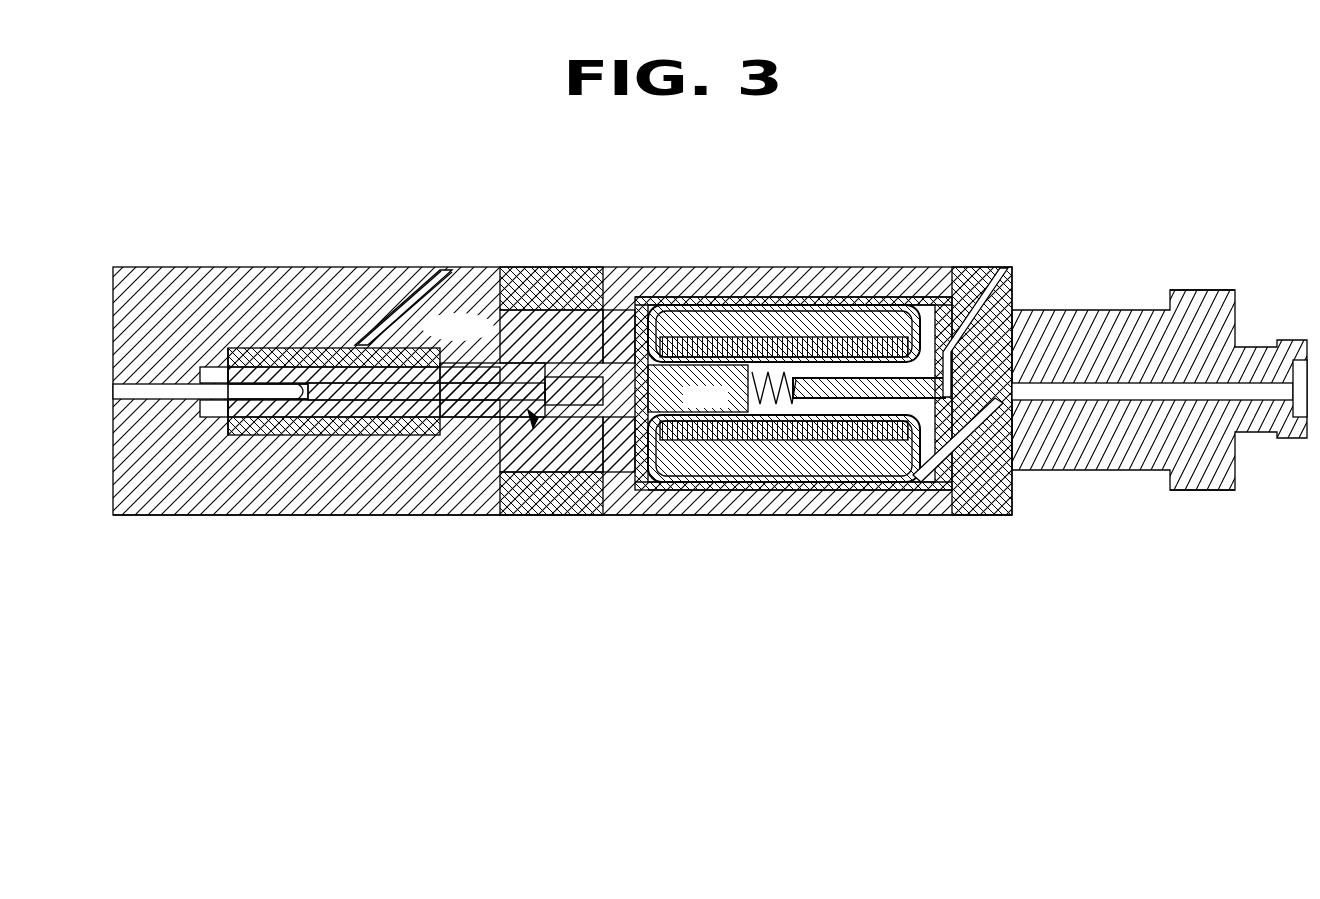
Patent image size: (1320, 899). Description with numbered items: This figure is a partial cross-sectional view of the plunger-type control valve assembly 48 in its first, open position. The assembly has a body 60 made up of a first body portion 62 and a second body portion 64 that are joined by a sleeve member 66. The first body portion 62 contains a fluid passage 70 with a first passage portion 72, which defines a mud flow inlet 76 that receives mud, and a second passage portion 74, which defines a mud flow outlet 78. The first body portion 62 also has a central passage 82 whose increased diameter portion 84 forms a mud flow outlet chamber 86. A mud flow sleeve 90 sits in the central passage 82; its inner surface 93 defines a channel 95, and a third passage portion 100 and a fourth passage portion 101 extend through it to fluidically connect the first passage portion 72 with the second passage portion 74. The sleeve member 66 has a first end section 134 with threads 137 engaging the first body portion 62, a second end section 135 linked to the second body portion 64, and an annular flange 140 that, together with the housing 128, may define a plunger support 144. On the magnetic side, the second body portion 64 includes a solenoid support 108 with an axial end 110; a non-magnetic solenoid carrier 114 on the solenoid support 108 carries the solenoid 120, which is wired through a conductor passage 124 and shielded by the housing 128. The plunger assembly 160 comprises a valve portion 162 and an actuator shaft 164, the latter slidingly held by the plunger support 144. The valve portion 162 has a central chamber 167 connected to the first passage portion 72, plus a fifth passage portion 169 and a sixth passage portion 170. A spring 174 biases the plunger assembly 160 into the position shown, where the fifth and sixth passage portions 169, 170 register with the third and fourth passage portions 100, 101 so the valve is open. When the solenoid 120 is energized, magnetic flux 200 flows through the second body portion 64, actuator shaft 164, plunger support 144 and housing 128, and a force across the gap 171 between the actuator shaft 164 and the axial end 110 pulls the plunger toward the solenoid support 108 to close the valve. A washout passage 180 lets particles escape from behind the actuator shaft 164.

The control valve assembly 48 is at (358, 100).
The body 60 is at (943, 520).
The solenoid 120 is at (908, 516).
The fluid passage 70 is at (160, 422).
The mud flow inlet 76 is at (118, 380).
The first passage portion 72 is at (126, 387).
The inner surface 93 is at (198, 378).
The third passage portion 100 is at (340, 310).
The mud flow sleeve 90 is at (230, 352).
The fifth passage portion 169 is at (253, 335).
The sixth passage portion 170 is at (428, 440).
The valve portion 162 is at (542, 425).
The plunger assembly 160 is at (497, 428).
The fourth passage portion 101 is at (434, 333).
The second passage portion 74 is at (400, 318).
The mud flow outlet 78 is at (452, 292).
The mud flow outlet chamber 86 is at (395, 330).
The first end section 134 is at (516, 272).
The threads 137 is at (544, 300).
The annular flange 140 is at (612, 300).
The axial end 110 is at (786, 300).
The gap 171 is at (700, 268).
The sleeve member 66 is at (737, 272).
The housing 128 is at (822, 270).
The solenoid carrier 114 is at (886, 300).
The actuator shaft 164 is at (724, 478).
The plunger support 144 is at (664, 386).
The spring 174 is at (779, 412).
The magnetic flux 200 is at (806, 470).
The solenoid support 108 is at (842, 490).
The second end section 135 is at (938, 270).
The washout passage 180 is at (1012, 283).
The conductor passage 124 is at (1082, 389).
The second body portion 64 is at (1185, 305).
The channel 95 is at (235, 432).
The central chamber 167 is at (298, 405).
The increased diameter portion 84 is at (330, 450).
The first body portion 62 is at (372, 498).
The central passage 82 is at (438, 430).